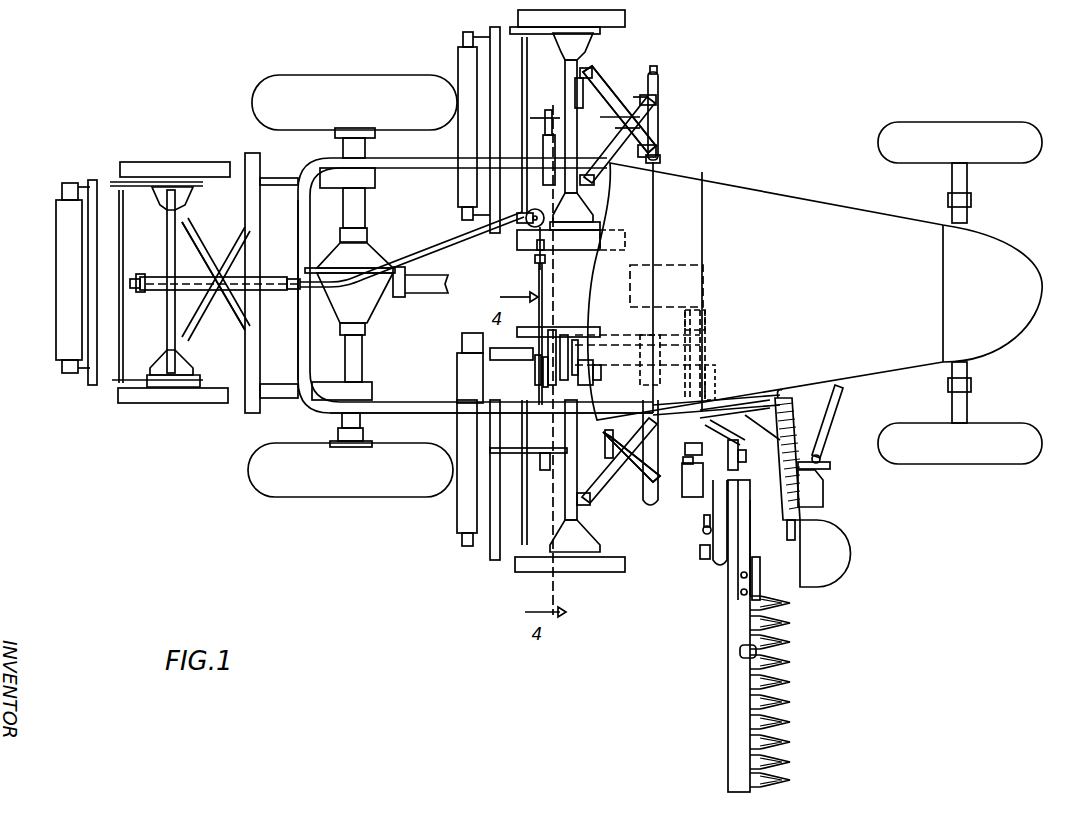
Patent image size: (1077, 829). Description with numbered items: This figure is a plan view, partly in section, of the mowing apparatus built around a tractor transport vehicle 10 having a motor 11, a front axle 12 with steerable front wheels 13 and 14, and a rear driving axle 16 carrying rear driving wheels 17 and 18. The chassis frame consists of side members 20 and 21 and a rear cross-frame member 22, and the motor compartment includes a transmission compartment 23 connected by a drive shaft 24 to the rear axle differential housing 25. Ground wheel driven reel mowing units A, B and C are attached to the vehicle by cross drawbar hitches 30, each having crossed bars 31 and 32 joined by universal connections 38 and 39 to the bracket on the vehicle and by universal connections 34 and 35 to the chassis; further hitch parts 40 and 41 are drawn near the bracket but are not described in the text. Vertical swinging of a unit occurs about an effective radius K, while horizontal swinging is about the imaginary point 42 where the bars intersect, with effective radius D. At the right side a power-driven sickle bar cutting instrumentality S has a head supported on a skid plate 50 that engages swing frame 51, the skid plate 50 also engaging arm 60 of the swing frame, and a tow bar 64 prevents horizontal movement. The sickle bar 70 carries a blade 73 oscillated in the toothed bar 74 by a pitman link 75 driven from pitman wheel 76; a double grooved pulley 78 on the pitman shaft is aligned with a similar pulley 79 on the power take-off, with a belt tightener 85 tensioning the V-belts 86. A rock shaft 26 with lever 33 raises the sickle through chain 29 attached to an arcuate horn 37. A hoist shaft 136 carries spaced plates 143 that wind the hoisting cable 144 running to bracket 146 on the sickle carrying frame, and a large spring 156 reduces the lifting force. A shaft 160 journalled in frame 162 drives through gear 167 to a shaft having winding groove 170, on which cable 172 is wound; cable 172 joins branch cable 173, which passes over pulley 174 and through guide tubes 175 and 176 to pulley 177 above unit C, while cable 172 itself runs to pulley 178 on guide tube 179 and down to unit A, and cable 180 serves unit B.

The tractor transport vehicle 10 is at (764, 178).
The motor 11 is at (810, 205).
The front axle 12 is at (966, 184).
The front wheel 13 is at (977, 130).
The front wheel 14 is at (990, 455).
The rear driving axle 16 is at (362, 357).
The rear driving wheel 17 is at (366, 483).
The rear driving wheel 18 is at (313, 73).
The side member 20 is at (414, 411).
The side member 21 is at (403, 160).
The rear cross-frame member 22 is at (298, 350).
The transmission compartment 23 is at (677, 268).
The drive shaft 24 is at (418, 286).
The rear axle differential housing 25 is at (370, 258).
The rock shaft 26 is at (670, 418).
The chain 29 is at (739, 447).
The cross drawbar hitch 30 is at (196, 258).
The crossed bar 31 is at (600, 93).
The crossed bar 32 is at (618, 148).
The lever 33 is at (572, 80).
The universal connection 34 is at (598, 70).
The universal connection 35 is at (595, 184).
The arcuate horn 37 is at (660, 78).
The universal connection 38 is at (661, 156).
The universal connection 39 is at (660, 96).
The bracket 40 is at (656, 150).
The bracket 41 is at (651, 75).
The imaginary point 42 is at (622, 117).
The skid plate 50 is at (824, 495).
The swing frame 51 is at (776, 398).
The arm 60 is at (830, 465).
The tow bar 64 is at (838, 403).
The sickle bar 70 is at (735, 745).
The blade 73 is at (767, 672).
The toothed bar 74 is at (766, 641).
The pitman link 75 is at (760, 532).
The pitman wheel 76 is at (705, 500).
The double grooved pulley 78 is at (680, 480).
The pulley 79 is at (697, 310).
The belt tightener 85 is at (686, 448).
The V-belts 86 is at (686, 464).
The shaft 136 is at (670, 380).
The spaced plates 143 is at (713, 368).
The hoisting cable 144 is at (706, 533).
The bracket 146 is at (700, 552).
The spring 156 is at (800, 510).
The shaft 160 is at (592, 372).
The frame 162 is at (572, 340).
The gear 167 is at (552, 335).
The winding groove 170 is at (535, 368).
The cable 172 is at (536, 280).
The branch cable 173 is at (530, 252).
The pulley 174 is at (517, 228).
The guide tube 175 is at (335, 284).
The guide tube 176 is at (218, 270).
The pulley 177 is at (148, 291).
The pulley 178 is at (546, 112).
The guide tube 179 is at (550, 145).
The cable 180 is at (545, 383).
The mowing unit A is at (627, 20).
The mowing unit B is at (600, 573).
The mowing unit C is at (133, 398).
The effective radius D is at (620, 124).
The effective radius K is at (592, 92).
The sickle bar cutting instrumentality S is at (780, 712).